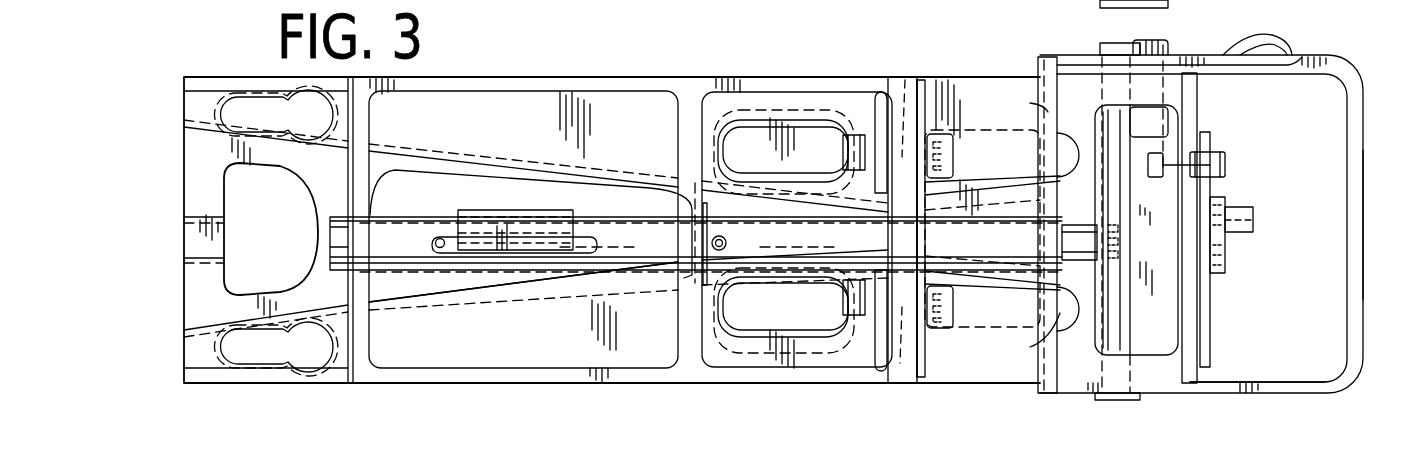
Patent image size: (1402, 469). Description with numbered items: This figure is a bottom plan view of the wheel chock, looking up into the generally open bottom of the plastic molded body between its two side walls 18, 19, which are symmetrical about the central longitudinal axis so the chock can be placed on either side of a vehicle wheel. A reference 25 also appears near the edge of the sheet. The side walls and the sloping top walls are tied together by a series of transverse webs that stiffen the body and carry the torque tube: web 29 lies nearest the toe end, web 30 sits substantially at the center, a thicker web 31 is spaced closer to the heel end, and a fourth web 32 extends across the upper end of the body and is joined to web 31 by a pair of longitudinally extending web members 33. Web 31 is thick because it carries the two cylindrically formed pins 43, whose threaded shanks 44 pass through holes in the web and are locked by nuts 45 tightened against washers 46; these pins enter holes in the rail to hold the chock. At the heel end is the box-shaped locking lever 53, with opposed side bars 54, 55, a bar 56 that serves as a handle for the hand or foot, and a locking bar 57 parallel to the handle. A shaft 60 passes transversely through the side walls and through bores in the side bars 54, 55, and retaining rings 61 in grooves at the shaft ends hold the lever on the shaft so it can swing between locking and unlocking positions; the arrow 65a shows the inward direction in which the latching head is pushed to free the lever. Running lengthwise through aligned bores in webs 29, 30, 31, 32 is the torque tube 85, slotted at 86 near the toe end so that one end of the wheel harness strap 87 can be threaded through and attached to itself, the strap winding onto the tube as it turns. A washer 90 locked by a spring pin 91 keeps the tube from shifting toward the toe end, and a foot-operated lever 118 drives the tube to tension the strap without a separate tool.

The side wall 18 is at (775, 84).
The side wall 19 is at (805, 365).
The frame member 25 is at (690, 0).
The web 29 is at (372, 345).
The web 30 is at (690, 312).
The web 31 is at (910, 342).
The fourth web 32 is at (1040, 343).
The web members 33 is at (990, 102).
The pins 43 is at (955, 158).
The threaded shanks 44 is at (906, 230).
The nuts 45 is at (855, 133).
The washers 46 is at (880, 92).
The locking lever 53 is at (1360, 68).
The side bar 54 is at (1205, 58).
The side bar 55 is at (1215, 388).
The bar 56 is at (1357, 247).
The locking bar 57 is at (1043, 105).
The shaft 60 is at (1130, 353).
The retaining rings 61 is at (1093, 53).
The arrow 65a is at (1263, 118).
The torque tube 85 is at (627, 240).
The slot 86 is at (438, 239).
The wheel harness strap 87 is at (490, 225).
The washer 90 is at (706, 214).
The spring pin 91 is at (727, 243).
The foot-operated lever 118 is at (1206, 336).